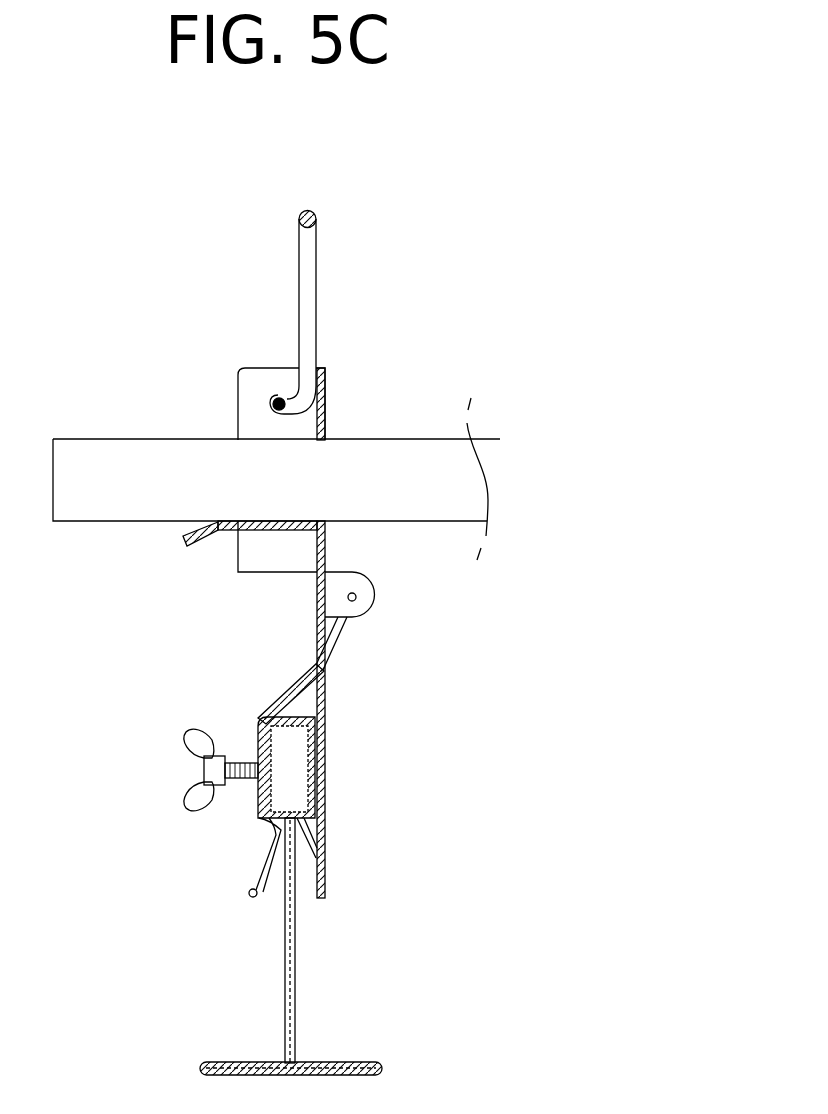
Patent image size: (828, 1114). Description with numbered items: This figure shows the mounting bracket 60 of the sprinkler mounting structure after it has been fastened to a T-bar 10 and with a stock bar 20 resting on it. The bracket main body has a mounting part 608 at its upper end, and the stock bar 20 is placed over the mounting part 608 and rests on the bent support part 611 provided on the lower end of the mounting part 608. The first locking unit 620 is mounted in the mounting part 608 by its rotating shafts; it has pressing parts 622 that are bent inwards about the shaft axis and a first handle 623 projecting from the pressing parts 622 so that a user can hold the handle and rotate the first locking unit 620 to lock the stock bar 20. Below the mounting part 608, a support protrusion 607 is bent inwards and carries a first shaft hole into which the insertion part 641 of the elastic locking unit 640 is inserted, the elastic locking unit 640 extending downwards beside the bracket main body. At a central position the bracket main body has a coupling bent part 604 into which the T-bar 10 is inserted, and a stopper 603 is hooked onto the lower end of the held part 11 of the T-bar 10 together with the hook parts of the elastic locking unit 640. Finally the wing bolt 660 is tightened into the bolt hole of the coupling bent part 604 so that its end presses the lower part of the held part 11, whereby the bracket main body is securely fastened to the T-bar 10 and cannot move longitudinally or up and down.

The T-bar 10 is at (297, 863).
The held part 11 is at (315, 772).
The stock bar 20 is at (145, 487).
The mounting bracket 60 is at (343, 717).
The stopper 603 is at (317, 805).
The coupling bent part 604 is at (262, 720).
The support protrusion 607 is at (371, 581).
The mounting part 608 is at (321, 432).
The bent support part 611 is at (260, 530).
The first locking unit 620 is at (320, 278).
The pressing part 622 is at (310, 397).
The first handle 623 is at (306, 210).
The elastic locking unit 640 is at (253, 896).
The insertion part 641 is at (358, 597).
The wing bolt 660 is at (203, 750).